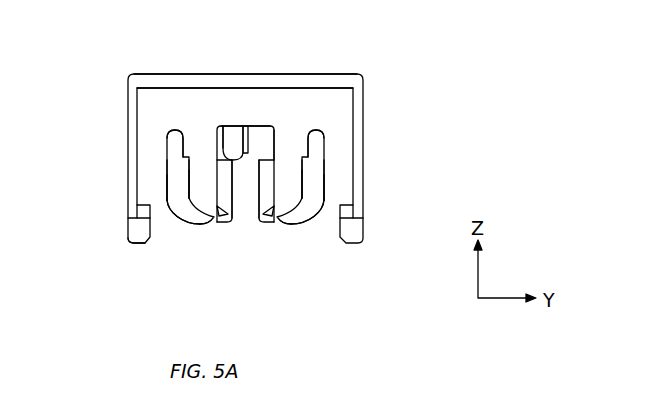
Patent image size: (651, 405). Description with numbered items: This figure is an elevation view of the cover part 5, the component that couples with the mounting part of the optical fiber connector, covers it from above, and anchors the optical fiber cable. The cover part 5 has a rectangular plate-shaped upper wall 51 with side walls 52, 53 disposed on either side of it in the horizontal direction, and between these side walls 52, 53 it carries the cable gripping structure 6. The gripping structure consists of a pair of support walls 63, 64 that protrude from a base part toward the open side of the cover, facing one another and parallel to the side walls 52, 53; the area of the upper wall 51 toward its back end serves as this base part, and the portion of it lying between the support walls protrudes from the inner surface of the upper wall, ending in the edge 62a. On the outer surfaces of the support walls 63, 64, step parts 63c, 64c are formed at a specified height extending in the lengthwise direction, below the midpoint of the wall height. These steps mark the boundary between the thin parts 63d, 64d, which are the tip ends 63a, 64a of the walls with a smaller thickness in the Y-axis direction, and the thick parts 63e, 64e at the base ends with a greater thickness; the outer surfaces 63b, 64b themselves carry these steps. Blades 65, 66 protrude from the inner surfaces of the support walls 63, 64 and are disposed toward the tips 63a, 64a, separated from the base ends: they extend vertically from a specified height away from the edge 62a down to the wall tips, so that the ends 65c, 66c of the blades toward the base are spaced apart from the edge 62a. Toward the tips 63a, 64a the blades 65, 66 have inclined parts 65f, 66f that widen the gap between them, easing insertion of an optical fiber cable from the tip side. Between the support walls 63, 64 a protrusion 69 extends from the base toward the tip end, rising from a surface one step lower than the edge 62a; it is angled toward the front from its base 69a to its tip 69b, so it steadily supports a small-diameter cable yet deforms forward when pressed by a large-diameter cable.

The cover part 5 is at (374, 178).
The cable gripping structure 6 is at (362, 283).
The upper wall 51 is at (295, 75).
The side wall 52 is at (136, 167).
The side wall 53 is at (354, 167).
The edge of the base part 62a is at (223, 128).
The support wall 63 is at (200, 213).
The tip end of support wall 63a is at (209, 222).
The outer surface of support wall 63b is at (168, 205).
The step part 63c is at (168, 158).
The thin part 63d is at (200, 183).
The thick part 63e is at (193, 145).
The support wall 64 is at (291, 213).
The tip end of support wall 64a is at (282, 222).
The outer surface of support wall 64b is at (323, 205).
The step part 64c is at (323, 158).
The thin part 64d is at (290, 188).
The thick part 64e is at (296, 145).
The blade 65 is at (218, 221).
The end of blade on the base end 65c is at (217, 137).
The inclined part 65f is at (226, 214).
The blade 66 is at (250, 212).
The end of blade on the base end 66c is at (275, 137).
The inclined part 66f is at (265, 214).
The protrusion 69 is at (275, 145).
The base of protrusion 69a is at (247, 128).
The tip of protrusion 69b is at (228, 128).